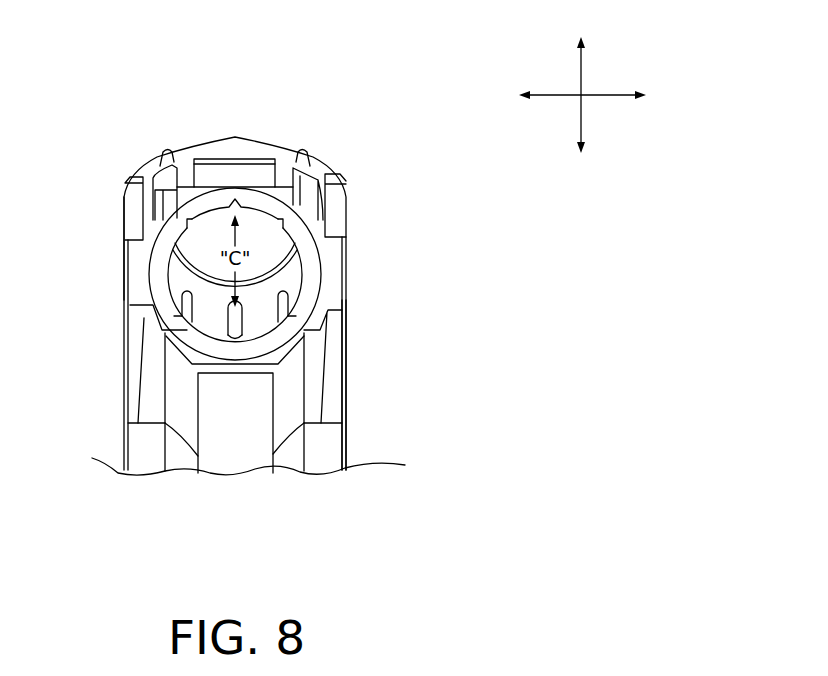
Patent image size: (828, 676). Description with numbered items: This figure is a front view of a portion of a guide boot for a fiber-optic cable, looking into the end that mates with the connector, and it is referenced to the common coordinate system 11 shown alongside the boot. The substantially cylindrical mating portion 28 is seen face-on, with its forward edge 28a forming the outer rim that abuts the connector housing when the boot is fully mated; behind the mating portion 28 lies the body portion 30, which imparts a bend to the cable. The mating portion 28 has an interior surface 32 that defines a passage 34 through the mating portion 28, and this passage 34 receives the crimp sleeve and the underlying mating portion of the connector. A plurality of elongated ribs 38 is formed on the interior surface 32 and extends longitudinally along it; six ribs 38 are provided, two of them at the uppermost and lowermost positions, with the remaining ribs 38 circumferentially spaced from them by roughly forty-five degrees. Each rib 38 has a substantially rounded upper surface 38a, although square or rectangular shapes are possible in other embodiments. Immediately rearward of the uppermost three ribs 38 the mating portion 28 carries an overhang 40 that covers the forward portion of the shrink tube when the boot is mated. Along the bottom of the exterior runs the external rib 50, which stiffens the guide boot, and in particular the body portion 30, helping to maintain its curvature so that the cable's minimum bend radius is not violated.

The coordinate system 11 is at (603, 77).
The mating portion 28 is at (362, 270).
The forward edge 28a is at (133, 268).
The body portion 30 is at (365, 437).
The interior surface 32 is at (221, 322).
The passage 34 is at (198, 254).
The ribs 38 is at (188, 203).
The upper surface 38a is at (180, 298).
The overhang 40 is at (237, 136).
The external rib 50 is at (235, 430).